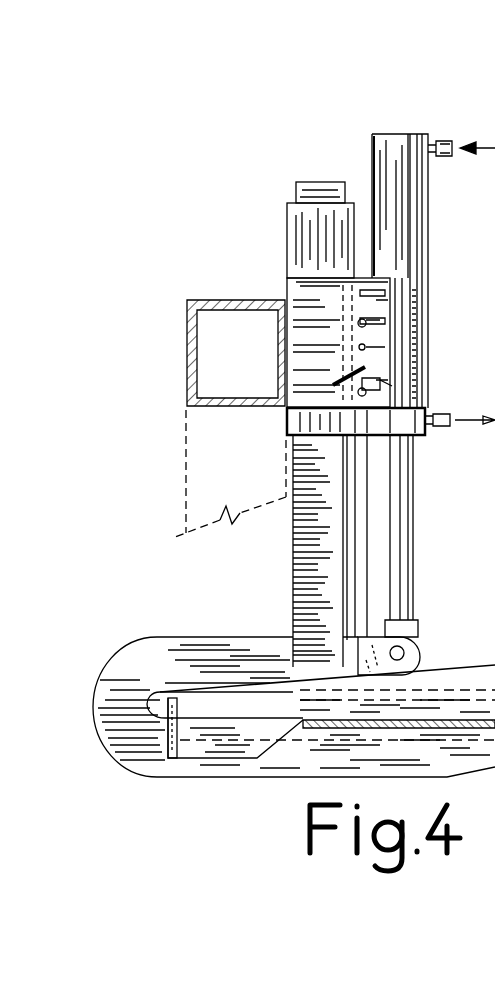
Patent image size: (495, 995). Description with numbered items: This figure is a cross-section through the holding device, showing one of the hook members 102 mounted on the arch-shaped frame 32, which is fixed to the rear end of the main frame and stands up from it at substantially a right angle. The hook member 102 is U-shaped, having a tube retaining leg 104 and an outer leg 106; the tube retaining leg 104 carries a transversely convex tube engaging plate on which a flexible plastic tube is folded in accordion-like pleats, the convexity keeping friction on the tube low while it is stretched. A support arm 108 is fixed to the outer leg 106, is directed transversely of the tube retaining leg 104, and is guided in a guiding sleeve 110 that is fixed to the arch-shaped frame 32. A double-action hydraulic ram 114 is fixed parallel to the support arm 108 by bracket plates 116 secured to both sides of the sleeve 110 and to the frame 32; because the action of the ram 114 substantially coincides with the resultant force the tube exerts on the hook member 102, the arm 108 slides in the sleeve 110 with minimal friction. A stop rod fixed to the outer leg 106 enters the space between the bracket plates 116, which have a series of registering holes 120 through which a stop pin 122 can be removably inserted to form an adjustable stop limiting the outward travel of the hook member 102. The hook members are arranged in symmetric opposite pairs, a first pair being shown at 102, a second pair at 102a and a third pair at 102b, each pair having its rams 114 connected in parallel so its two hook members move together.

The arch-shaped frame 32 is at (207, 300).
The hook member 102 is at (294, 648).
The second pair of hook members 102a is at (300, 618).
The third pair of hook members 102b is at (108, 660).
The tube retaining leg 104 is at (353, 743).
The outer leg 106 is at (221, 660).
The support arm 108 is at (327, 192).
The guiding sleeve 110 is at (310, 217).
The double-action hydraulic ram 114 is at (390, 157).
The bracket plates 116 is at (320, 300).
The registering holes 120 is at (424, 334).
The stop pin 122 is at (430, 358).